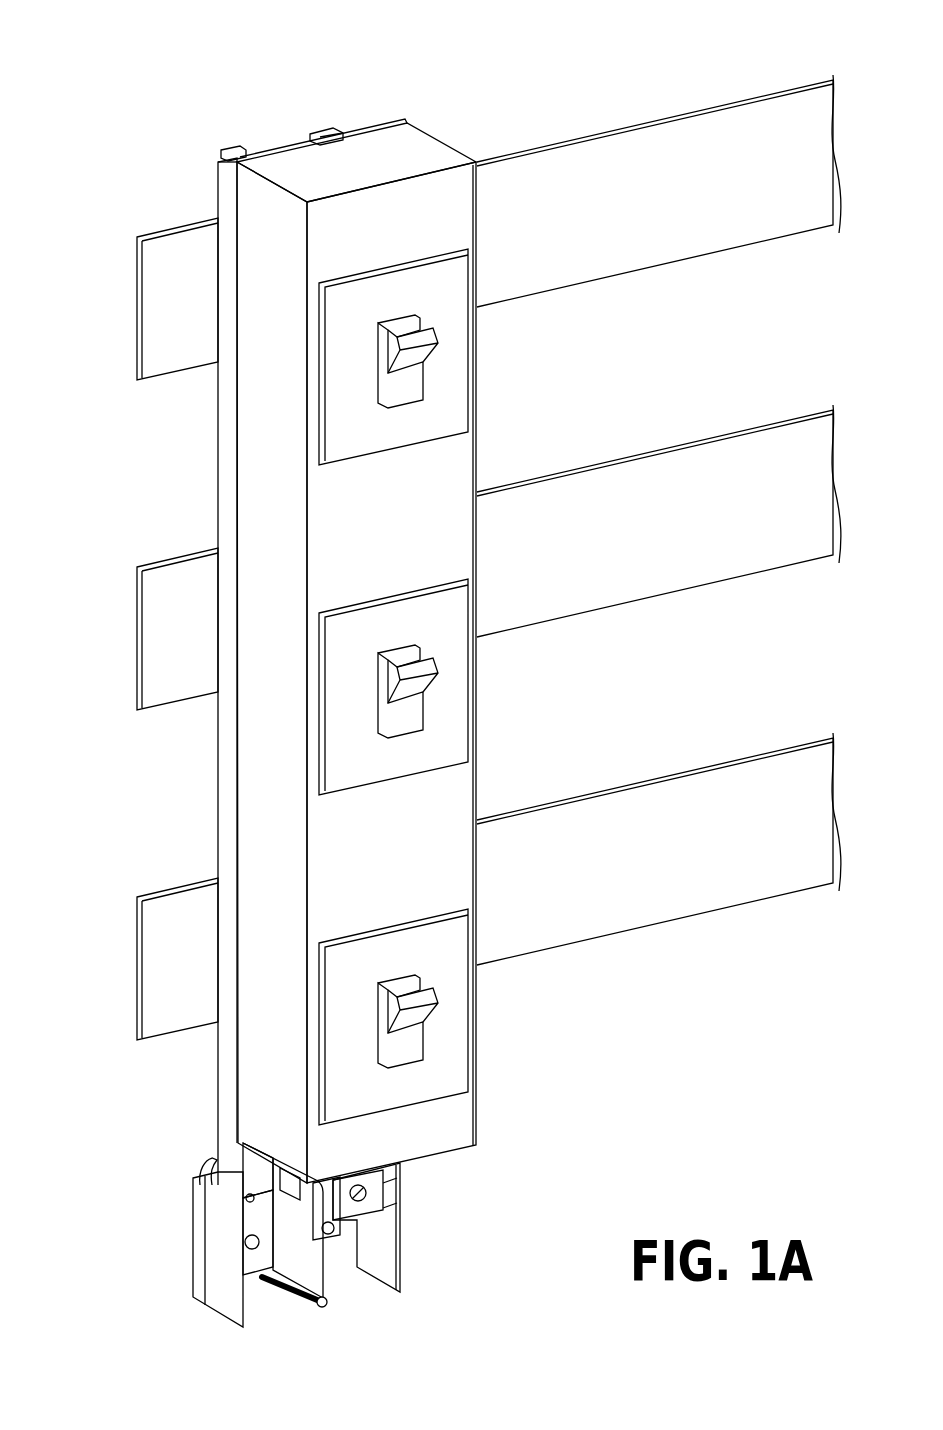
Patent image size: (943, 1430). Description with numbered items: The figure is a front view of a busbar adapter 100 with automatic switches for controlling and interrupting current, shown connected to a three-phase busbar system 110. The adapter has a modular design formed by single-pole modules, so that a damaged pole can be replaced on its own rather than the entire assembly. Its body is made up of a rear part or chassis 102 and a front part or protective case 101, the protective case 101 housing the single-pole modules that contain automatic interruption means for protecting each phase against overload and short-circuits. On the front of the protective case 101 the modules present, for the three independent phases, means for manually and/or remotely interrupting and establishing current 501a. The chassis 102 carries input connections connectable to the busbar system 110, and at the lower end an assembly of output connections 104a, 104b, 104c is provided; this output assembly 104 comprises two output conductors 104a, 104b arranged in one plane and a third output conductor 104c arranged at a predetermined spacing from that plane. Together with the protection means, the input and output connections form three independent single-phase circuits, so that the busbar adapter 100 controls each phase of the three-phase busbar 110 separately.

The busbar adapter 100 is at (468, 117).
The protective case 101 is at (275, 497).
The chassis 102 is at (228, 197).
The mounting bracket 104 is at (402, 1200).
The output conductor 104a is at (257, 1262).
The output conductor 104b is at (333, 1243).
The third output conductor 104c is at (372, 1205).
The three-phase busbar system 110 is at (733, 150).
The means for manually and/or remotely interrupting and establishing current 501a is at (425, 340).